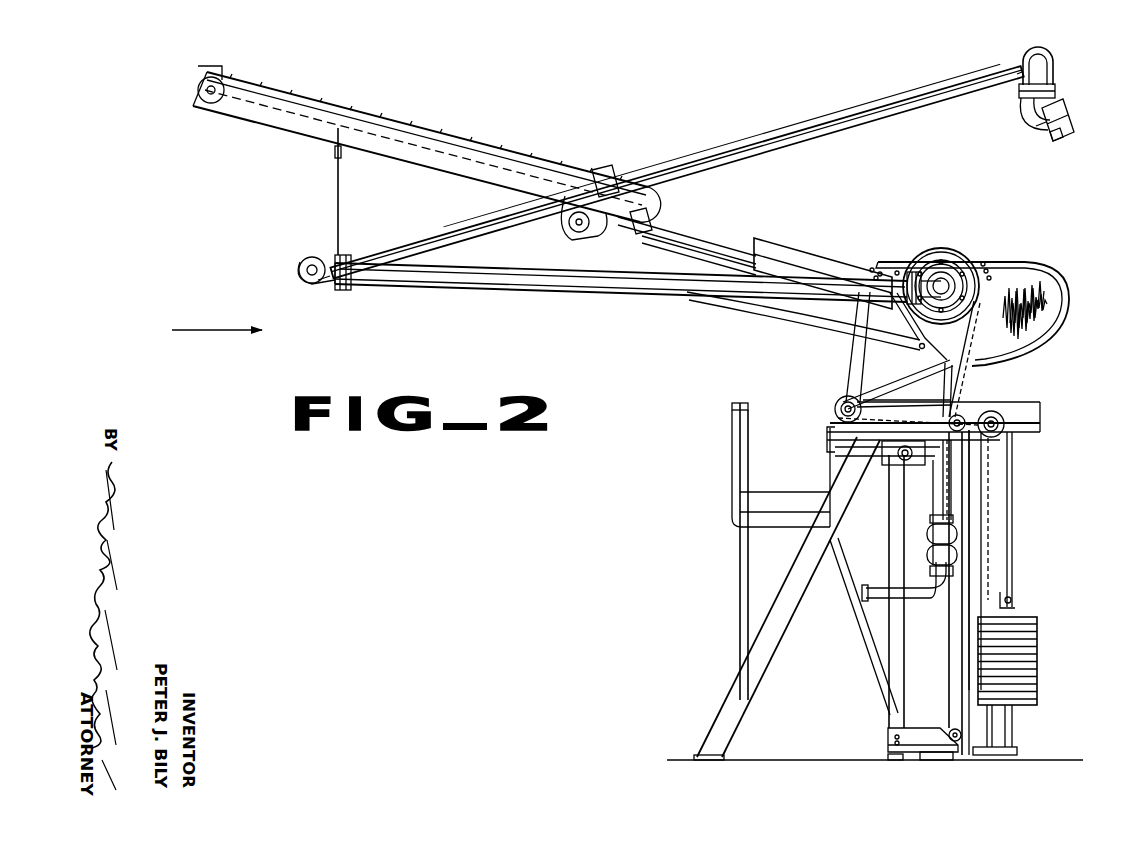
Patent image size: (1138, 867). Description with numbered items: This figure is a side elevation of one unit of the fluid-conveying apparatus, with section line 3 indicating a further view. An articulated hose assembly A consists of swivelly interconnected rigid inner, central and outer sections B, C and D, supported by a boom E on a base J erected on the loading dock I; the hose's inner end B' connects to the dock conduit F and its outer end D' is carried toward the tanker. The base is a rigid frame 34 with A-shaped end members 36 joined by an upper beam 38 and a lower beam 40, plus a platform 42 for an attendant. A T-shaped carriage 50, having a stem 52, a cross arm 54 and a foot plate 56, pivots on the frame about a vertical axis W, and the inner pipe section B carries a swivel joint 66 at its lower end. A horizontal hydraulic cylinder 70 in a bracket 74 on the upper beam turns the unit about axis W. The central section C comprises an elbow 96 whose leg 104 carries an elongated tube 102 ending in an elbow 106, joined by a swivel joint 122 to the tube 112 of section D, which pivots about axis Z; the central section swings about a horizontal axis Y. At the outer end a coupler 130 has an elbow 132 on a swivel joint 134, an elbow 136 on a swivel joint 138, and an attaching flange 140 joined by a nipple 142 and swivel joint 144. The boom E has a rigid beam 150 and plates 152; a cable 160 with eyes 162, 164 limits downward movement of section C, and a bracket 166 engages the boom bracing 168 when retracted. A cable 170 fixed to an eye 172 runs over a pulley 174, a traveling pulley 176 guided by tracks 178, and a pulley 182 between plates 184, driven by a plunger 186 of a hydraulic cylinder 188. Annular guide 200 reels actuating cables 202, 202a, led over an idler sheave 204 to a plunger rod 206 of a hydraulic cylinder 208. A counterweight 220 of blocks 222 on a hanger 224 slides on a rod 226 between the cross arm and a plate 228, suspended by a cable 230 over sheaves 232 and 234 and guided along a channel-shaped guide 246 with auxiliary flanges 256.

The section line 3 is at (217, 320).
The rigid frame 34 is at (738, 660).
The end members 36 is at (893, 703).
The upper beam 38 is at (838, 447).
The lower beam 40 is at (935, 757).
The platform 42 is at (732, 465).
The T-shaped carriage 50 is at (954, 402).
The stem 52 is at (978, 558).
The cross arm 54 is at (1035, 418).
The foot plate 56 is at (962, 750).
The swivel joint 66 is at (942, 543).
The hydraulic cylinder 70 is at (886, 458).
The bracket 74 is at (918, 459).
The elbow 96 is at (941, 258).
The elongated metal tube 102 is at (690, 285).
The leg of elbow 104 is at (918, 268).
The elbow 106 is at (302, 266).
The elongated metal tube 112 is at (682, 165).
The swivel joint 122 is at (312, 277).
The coupler 130 is at (1048, 89).
The elbow 132 is at (1041, 69).
The swivel joint 134 is at (1046, 59).
The elbow 136 is at (1022, 110).
The swivel joint 138 is at (1037, 92).
The attaching flange 140 is at (1062, 134).
The short nipple 142 is at (1070, 113).
The swivel joint 144 is at (1040, 129).
The rigid beam 150 is at (821, 256).
The plate 152 is at (999, 314).
The cable 160 is at (336, 203).
The eye 162 is at (334, 150).
The eye 164 is at (336, 256).
The bracket 166 is at (850, 365).
The bracing 168 is at (818, 316).
The cable 170 is at (474, 100).
The eye 172 is at (608, 170).
The pulley 174 is at (210, 73).
The traveling pulley 176 is at (632, 234).
The tracks 178 is at (682, 213).
The pulley 182 is at (586, 239).
The plates 184 is at (569, 226).
The plunger 186 is at (690, 238).
The hydraulic cylinder 188 is at (803, 264).
The cable guide 200 is at (915, 272).
The actuating cable 202 is at (958, 388).
The actuating cable 202a is at (892, 372).
The idler sheave 204 is at (935, 416).
The plunger rod 206 is at (953, 576).
The hydraulic cylinder 208 is at (953, 674).
The counterweight 220 is at (1052, 661).
The metal blocks 222 is at (1118, 645).
The hanger 224 is at (1015, 606).
The rod 226 is at (1010, 724).
The plate 228 is at (1013, 750).
The cable 230 is at (852, 398).
The sheave 232 is at (1005, 428).
The sheave 234 is at (834, 408).
The channel-shaped guide 246 is at (1058, 324).
The auxiliary flanges 256 is at (955, 373).
The hose assembly A is at (999, 288).
The inner section B is at (1006, 480).
The inner end B' is at (894, 512).
The central section C is at (621, 308).
The outer section D is at (675, 168).
The outer end D' is at (1004, 50).
The boom E is at (414, 147).
The conduit F is at (866, 600).
The loading dock I is at (810, 762).
The base J is at (802, 563).
The vertical axis W is at (1006, 541).
The horizontal axis Y is at (952, 258).
The axis Z is at (312, 283).